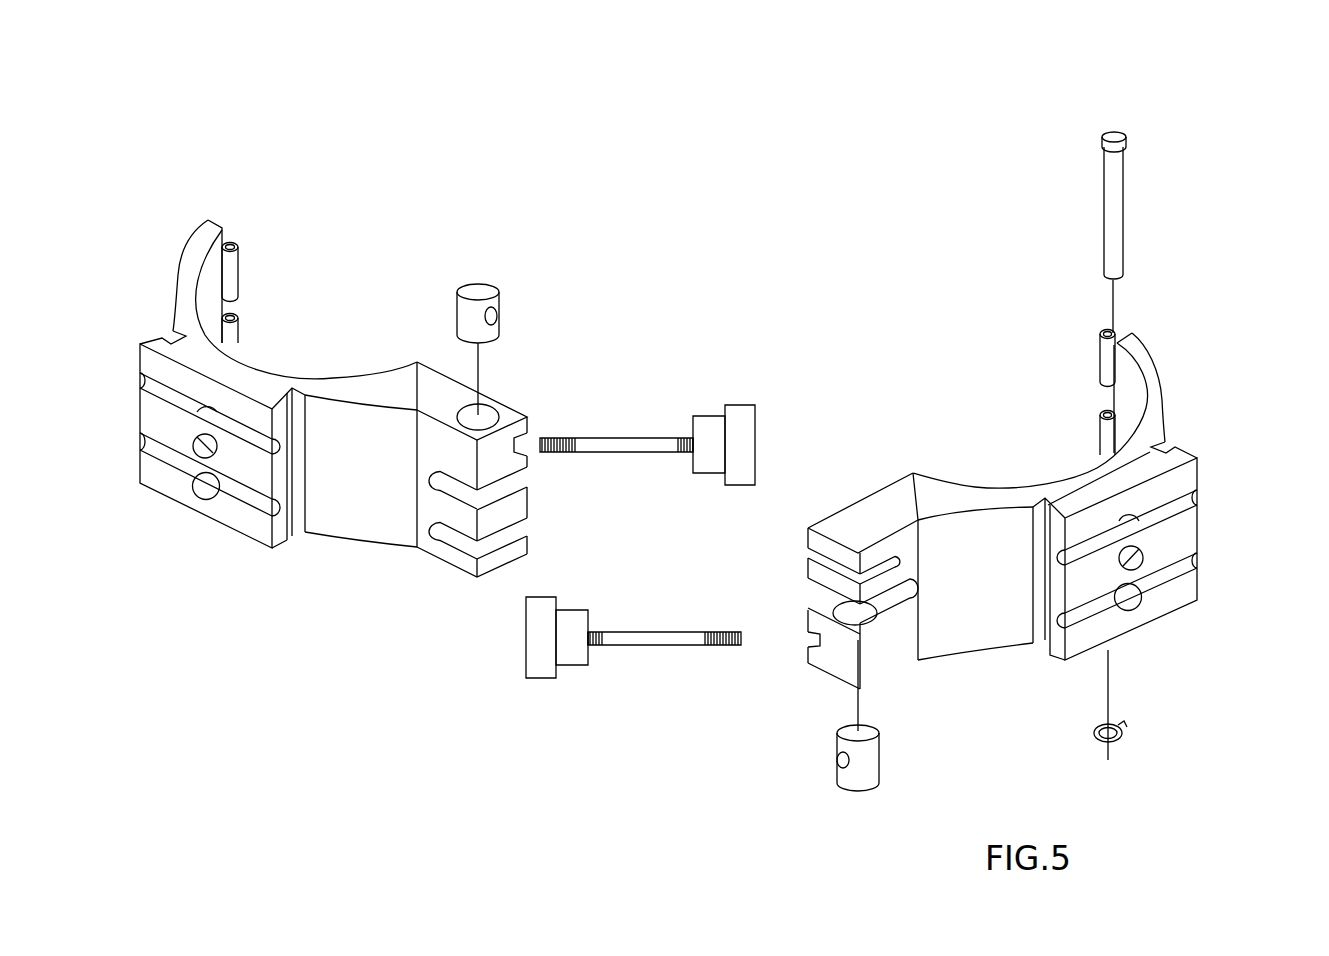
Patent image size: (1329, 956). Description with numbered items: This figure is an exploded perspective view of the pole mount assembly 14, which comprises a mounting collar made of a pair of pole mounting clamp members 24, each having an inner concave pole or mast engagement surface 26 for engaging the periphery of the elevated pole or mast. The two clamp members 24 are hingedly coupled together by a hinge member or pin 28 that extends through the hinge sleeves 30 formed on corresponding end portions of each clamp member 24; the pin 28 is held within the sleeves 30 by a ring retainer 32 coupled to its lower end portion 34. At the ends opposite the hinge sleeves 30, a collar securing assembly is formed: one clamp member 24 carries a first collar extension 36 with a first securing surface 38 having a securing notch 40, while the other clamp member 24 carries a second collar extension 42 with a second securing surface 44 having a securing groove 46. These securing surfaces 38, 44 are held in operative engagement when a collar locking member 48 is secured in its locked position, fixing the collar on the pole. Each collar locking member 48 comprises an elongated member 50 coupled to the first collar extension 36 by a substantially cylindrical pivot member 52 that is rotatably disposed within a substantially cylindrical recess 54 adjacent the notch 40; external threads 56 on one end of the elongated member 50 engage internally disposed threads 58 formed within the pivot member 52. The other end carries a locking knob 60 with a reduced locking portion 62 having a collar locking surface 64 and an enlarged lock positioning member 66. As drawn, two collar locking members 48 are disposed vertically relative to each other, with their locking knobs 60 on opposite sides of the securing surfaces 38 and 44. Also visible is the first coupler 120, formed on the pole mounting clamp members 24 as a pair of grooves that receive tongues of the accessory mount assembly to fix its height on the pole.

The pole mount assembly 14 is at (661, 208).
The first coupler 120 is at (218, 600).
The pole mounting clamp member 24 is at (367, 497).
The inner concave pole or mast engagement surface 26 is at (207, 265).
The hinge member or pin 28 is at (1120, 190).
The hinge sleeve 30 is at (240, 277).
The ring retainer 32 is at (1100, 747).
The lower end portion 34 is at (1117, 280).
The first collar extension 36 is at (450, 458).
The first securing surface 38 is at (523, 393).
The securing notch 40 is at (522, 444).
The second collar extension 42 is at (893, 508).
The second securing surface 44 is at (853, 507).
The securing groove 46 is at (840, 570).
The collar locking member 48 is at (632, 410).
The elongated member 50 is at (628, 452).
The substantially cylindrical pivot member 52 is at (483, 288).
The substantially cylindrical recess 54 is at (468, 402).
The external threads 56 is at (573, 452).
The internally disposed threads 58 is at (490, 312).
The locking knob 60 is at (750, 377).
The reduced locking portion 62 is at (713, 468).
The collar locking surface 64 is at (692, 463).
The enlarged lock positioning member 66 is at (752, 430).